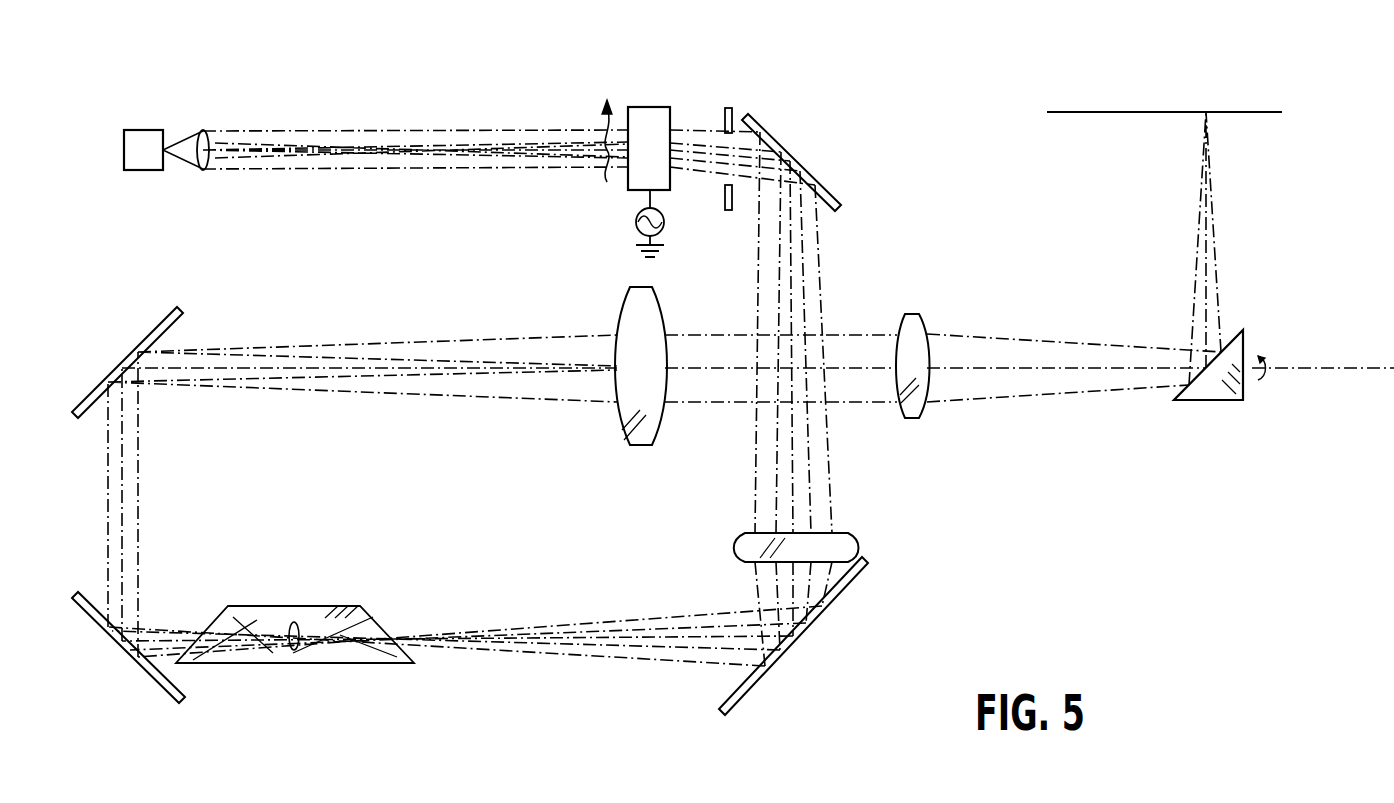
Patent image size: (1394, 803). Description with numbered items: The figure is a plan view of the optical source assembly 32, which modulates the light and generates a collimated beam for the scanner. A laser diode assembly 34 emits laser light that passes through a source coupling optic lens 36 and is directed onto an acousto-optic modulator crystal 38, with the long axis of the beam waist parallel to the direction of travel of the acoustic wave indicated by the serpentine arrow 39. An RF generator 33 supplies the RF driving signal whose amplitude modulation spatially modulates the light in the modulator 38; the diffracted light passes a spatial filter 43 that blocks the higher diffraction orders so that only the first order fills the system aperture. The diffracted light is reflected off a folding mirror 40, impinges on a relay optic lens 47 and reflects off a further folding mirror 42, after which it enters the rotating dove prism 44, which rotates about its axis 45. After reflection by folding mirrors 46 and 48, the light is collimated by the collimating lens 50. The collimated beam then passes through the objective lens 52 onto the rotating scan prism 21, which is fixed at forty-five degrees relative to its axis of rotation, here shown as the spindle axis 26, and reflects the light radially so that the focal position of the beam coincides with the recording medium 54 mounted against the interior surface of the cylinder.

The rotating scan prism 21 is at (1197, 400).
The spindle axis 26 is at (1288, 368).
The optical source assembly 32 is at (733, 70).
The RF generator 33 is at (664, 222).
The laser diode assembly 34 is at (145, 130).
The source coupling optic lens 36 is at (210, 157).
The acousto-optic modulator crystal 38 is at (648, 107).
The serpentine arrow 39 is at (607, 162).
The folding mirror 40 is at (828, 187).
The folding mirror 42 is at (745, 700).
The spatial filter 43 is at (737, 115).
The rotating dove prism 44 is at (372, 606).
The axis 45 is at (292, 632).
The folding mirror 46 is at (147, 672).
The relay optic lens 47 is at (848, 540).
The folding mirror 48 is at (168, 312).
The collimating lens 50 is at (628, 312).
The objective lens 52 is at (921, 410).
The recording medium 54 is at (1080, 113).